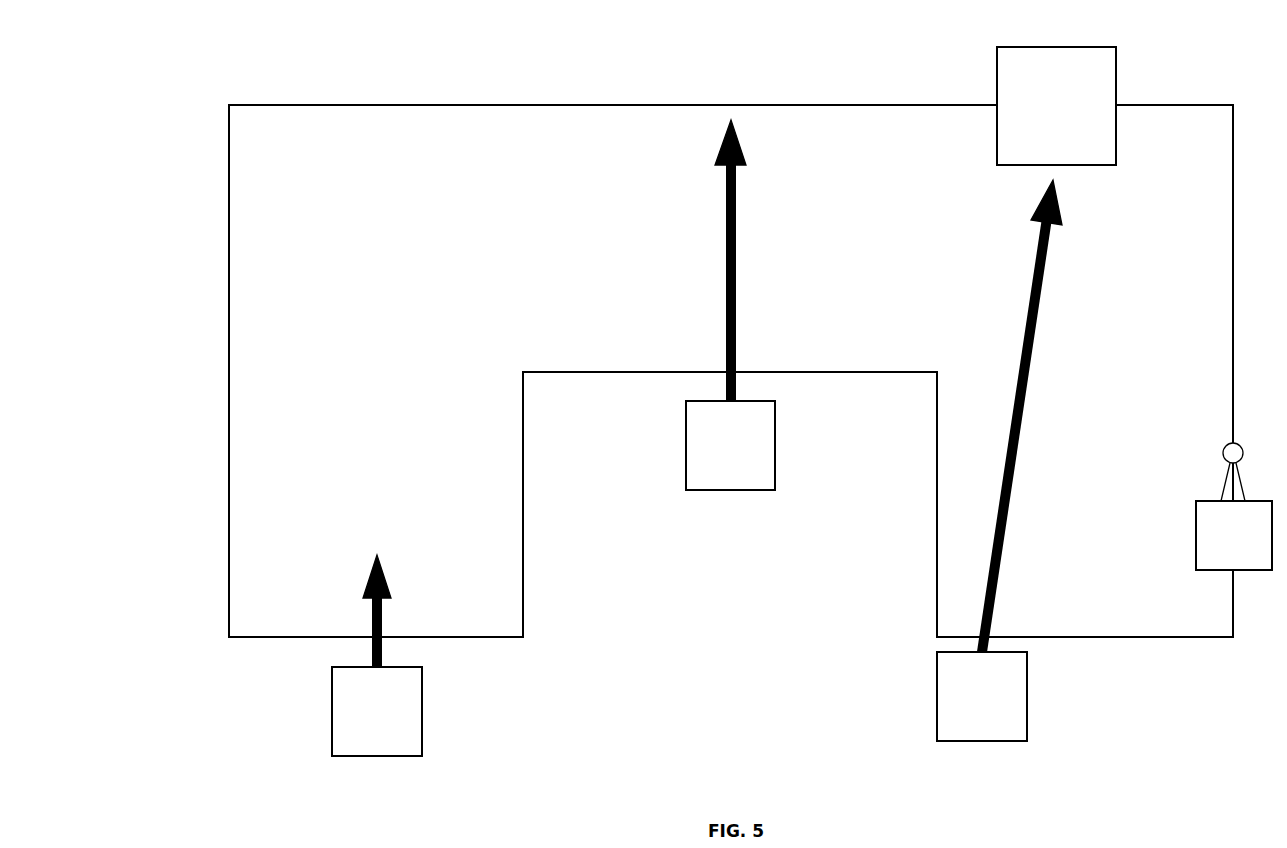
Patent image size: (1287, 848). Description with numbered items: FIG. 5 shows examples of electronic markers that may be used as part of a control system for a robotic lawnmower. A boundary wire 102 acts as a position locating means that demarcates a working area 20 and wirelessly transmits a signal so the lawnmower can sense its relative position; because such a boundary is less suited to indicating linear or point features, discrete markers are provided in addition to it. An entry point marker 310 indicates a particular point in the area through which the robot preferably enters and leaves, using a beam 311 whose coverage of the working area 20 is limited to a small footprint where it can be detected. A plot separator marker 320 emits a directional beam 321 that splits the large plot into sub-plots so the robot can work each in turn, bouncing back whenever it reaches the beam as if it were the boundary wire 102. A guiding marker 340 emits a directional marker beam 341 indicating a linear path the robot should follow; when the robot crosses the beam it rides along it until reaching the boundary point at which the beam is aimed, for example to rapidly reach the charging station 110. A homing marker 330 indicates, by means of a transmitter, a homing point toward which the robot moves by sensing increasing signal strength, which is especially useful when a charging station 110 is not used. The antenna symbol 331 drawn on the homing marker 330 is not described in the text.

The boundary wire 102 is at (435, 105).
The working area 20 is at (375, 235).
The charging station 110 is at (1056, 106).
The entry point marker 310 is at (377, 711).
The beam 311 is at (380, 614).
The plot separator marker 320 is at (730, 445).
The directional beam 321 is at (736, 228).
The homing marker 330 is at (1234, 535).
The antenna 331 is at (1220, 472).
The guiding marker 340 is at (982, 696).
The marker beam 341 is at (1037, 333).